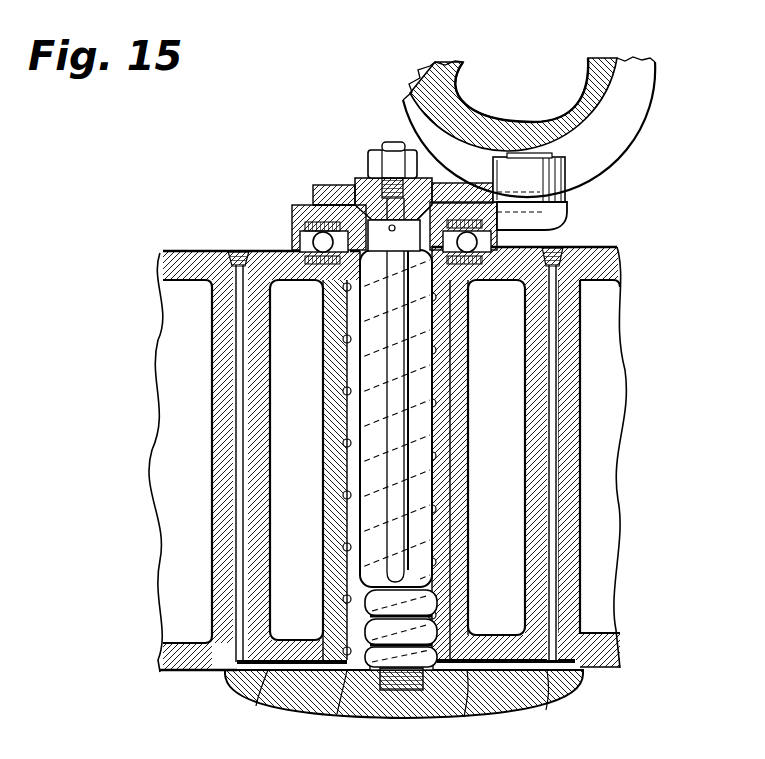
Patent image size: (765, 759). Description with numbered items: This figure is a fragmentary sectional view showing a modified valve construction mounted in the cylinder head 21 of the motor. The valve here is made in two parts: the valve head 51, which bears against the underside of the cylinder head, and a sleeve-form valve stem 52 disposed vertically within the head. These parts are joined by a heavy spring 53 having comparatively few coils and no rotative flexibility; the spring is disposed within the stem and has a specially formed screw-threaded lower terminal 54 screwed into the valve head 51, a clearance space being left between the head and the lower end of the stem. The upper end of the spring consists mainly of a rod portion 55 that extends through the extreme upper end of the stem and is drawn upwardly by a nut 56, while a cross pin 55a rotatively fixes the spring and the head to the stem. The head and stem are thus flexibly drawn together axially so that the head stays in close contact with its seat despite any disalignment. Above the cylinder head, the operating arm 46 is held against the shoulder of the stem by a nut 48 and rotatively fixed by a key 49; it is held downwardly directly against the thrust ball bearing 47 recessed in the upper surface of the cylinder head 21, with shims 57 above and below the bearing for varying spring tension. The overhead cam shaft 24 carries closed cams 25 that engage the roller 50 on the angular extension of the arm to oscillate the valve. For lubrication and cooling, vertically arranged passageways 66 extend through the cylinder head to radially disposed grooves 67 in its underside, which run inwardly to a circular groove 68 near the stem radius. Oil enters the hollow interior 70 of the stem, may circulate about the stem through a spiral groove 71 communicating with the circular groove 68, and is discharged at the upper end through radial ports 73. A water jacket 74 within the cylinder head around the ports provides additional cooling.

The cylinder head 21 is at (603, 570).
The overhead cam shaft 24 is at (500, 122).
The closed cams 25 is at (600, 147).
The operating arm 46 is at (562, 220).
The thrust ball bearing 47 is at (312, 243).
The nut 48 is at (331, 185).
The key 49 is at (314, 195).
The roller 50 is at (567, 191).
The valve head 51 is at (320, 707).
The valve stem 52 is at (452, 483).
The heavy spring 53 is at (420, 606).
The screw-threaded lower terminal 54 is at (380, 715).
The rod portion 55 is at (417, 450).
The cross pin 55a is at (394, 226).
The nut 56 is at (372, 160).
The shims 57 is at (480, 281).
The passageways 66 is at (240, 514).
The grooves 67 is at (270, 697).
The circular groove 68 is at (343, 698).
The hollow interior 70 is at (423, 390).
The spiral groove 71 is at (351, 488).
The radial ports 73 is at (320, 290).
The water jacket 74 is at (608, 442).